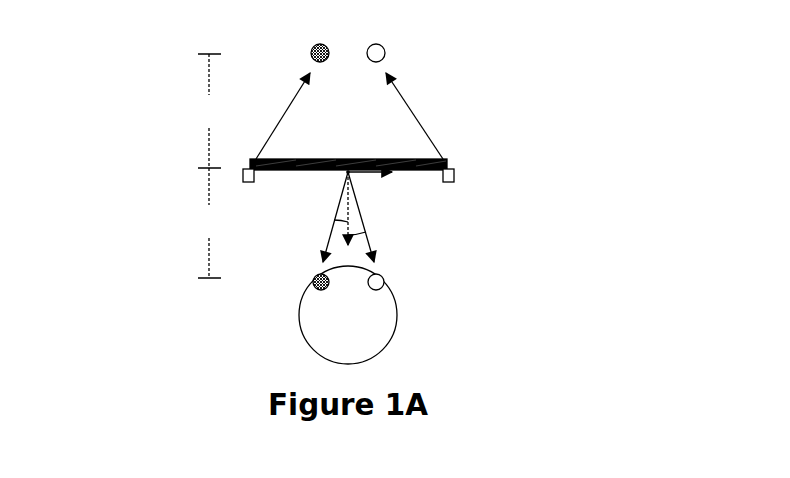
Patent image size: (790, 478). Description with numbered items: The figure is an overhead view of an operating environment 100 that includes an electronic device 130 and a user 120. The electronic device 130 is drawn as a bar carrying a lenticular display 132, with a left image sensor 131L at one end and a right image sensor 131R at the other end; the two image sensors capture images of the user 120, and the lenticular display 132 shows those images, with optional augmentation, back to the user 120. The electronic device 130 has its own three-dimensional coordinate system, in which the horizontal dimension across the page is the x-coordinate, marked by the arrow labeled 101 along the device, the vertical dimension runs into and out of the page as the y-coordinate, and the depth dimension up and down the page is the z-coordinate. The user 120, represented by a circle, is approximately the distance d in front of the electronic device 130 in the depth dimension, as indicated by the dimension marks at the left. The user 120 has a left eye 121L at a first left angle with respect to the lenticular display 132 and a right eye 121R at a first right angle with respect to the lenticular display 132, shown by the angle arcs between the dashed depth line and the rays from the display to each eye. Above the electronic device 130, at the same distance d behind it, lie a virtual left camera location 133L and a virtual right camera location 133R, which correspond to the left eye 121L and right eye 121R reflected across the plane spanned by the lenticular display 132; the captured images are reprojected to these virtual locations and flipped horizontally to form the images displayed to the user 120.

The operating environment 100 is at (148, 55).
The electronic device 130 is at (312, 158).
The left image sensor 131L is at (253, 181).
The right image sensor 131R is at (455, 182).
The lenticular display 132 is at (280, 171).
The x-axis reference direction 101 is at (390, 177).
The virtual left camera location 133L is at (318, 44).
The virtual right camera location 133R is at (380, 44).
The user 120 is at (397, 319).
The left eye 121L is at (308, 275).
The right eye 121R is at (387, 273).